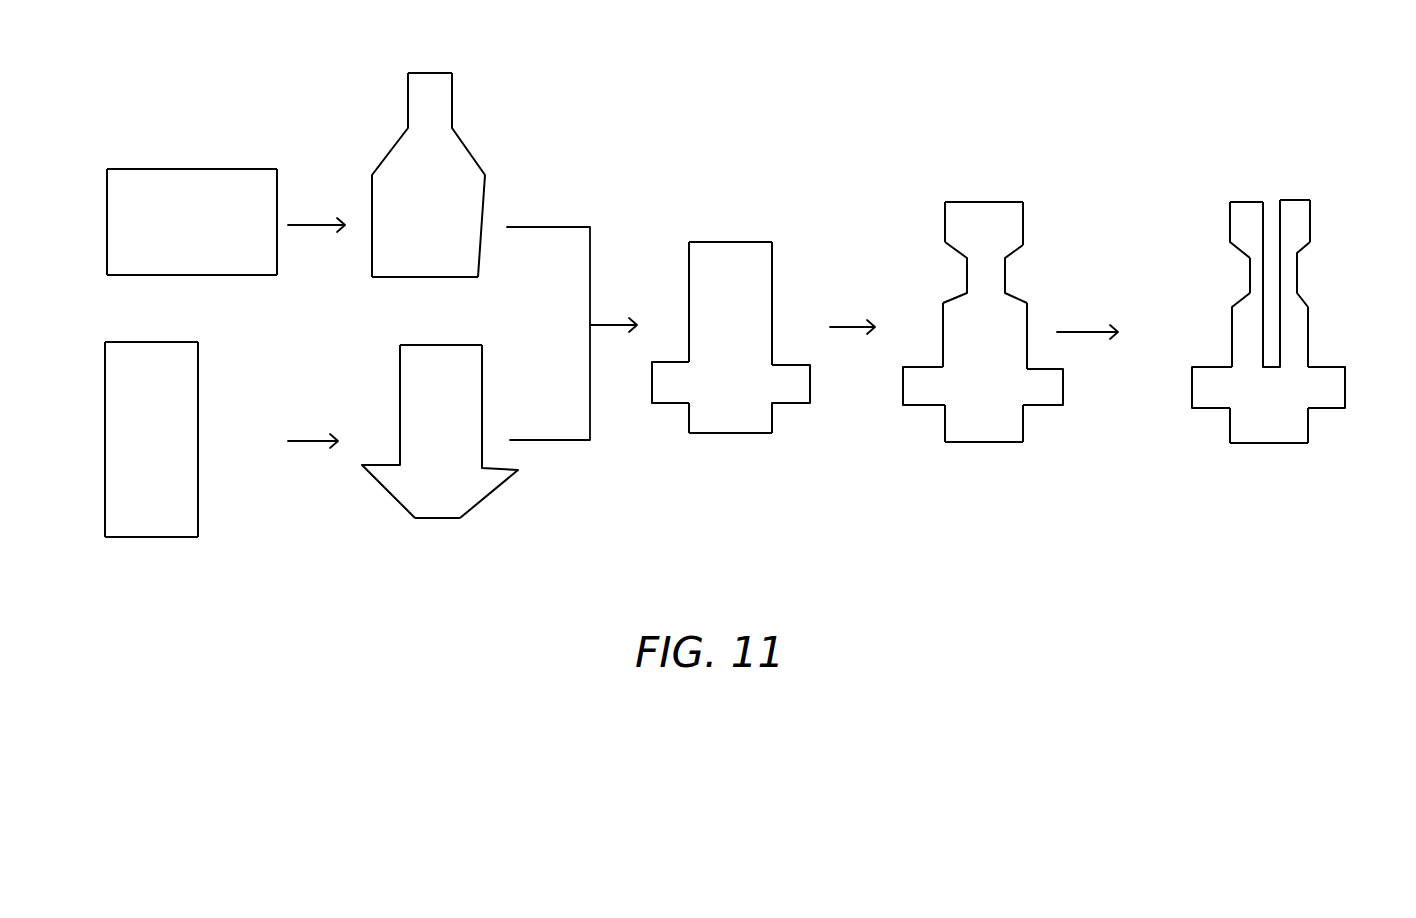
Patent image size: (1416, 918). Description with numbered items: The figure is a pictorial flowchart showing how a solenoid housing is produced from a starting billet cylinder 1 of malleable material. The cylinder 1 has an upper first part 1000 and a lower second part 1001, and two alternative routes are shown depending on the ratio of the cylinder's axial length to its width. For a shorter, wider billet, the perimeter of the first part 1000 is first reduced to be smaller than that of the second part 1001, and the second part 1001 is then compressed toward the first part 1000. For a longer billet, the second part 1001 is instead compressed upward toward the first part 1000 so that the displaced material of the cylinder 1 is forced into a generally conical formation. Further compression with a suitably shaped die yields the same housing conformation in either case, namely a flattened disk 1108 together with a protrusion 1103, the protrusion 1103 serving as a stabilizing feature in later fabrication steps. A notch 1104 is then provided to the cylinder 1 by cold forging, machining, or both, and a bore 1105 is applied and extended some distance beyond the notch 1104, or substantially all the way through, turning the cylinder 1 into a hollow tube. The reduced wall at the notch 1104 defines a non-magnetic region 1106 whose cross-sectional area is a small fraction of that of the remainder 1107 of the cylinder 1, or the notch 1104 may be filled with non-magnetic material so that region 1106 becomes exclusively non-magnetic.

The cylinder 1 is at (125, 115).
The first part 1000 is at (183, 168).
The second part 1001 is at (175, 276).
The protrusion 1103 is at (774, 418).
The notch 1104 is at (1022, 265).
The bore 1105 is at (1272, 210).
The non-magnetic region 1106 is at (1252, 262).
The remainder of cylinder 1107 is at (1229, 226).
The flattened disk 1108 is at (811, 385).